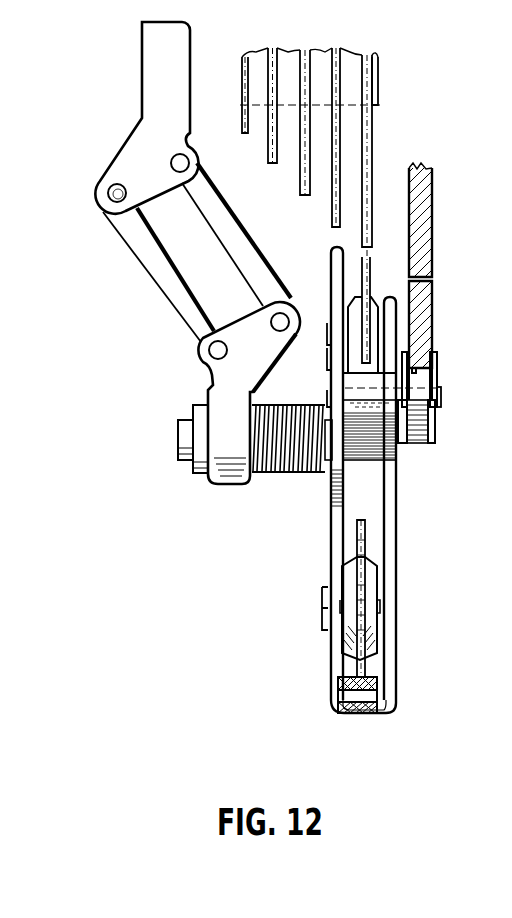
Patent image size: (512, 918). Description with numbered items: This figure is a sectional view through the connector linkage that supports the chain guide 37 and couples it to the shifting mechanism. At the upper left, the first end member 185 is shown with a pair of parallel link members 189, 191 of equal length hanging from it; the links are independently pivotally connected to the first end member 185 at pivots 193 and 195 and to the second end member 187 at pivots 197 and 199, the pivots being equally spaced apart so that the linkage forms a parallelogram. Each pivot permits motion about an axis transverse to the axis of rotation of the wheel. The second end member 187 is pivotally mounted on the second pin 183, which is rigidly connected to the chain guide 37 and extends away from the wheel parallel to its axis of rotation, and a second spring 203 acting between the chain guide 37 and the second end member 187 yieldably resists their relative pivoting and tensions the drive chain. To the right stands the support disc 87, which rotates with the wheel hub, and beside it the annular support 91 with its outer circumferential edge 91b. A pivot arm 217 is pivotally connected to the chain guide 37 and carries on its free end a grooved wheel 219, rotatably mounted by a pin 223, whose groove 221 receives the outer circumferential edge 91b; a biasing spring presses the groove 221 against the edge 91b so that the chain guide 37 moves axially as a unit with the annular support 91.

The chain guide 37 is at (312, 636).
The support disc 87 is at (418, 233).
The annular support 91 is at (425, 312).
The outer circumferential edge 91b is at (417, 375).
The second pin 183 is at (182, 435).
The first end member 185 is at (155, 70).
The second end member 187 is at (212, 468).
The link member 189 is at (145, 260).
The link member 191 is at (243, 245).
The pivot 193 is at (108, 191).
The pivot 195 is at (187, 163).
The pivot 197 is at (212, 350).
The pivot 199 is at (284, 315).
The second spring 203 is at (290, 462).
The pivot arm 217 is at (368, 455).
The grooved wheel 219 is at (437, 438).
The groove 221 is at (415, 435).
The pin 223 is at (440, 400).